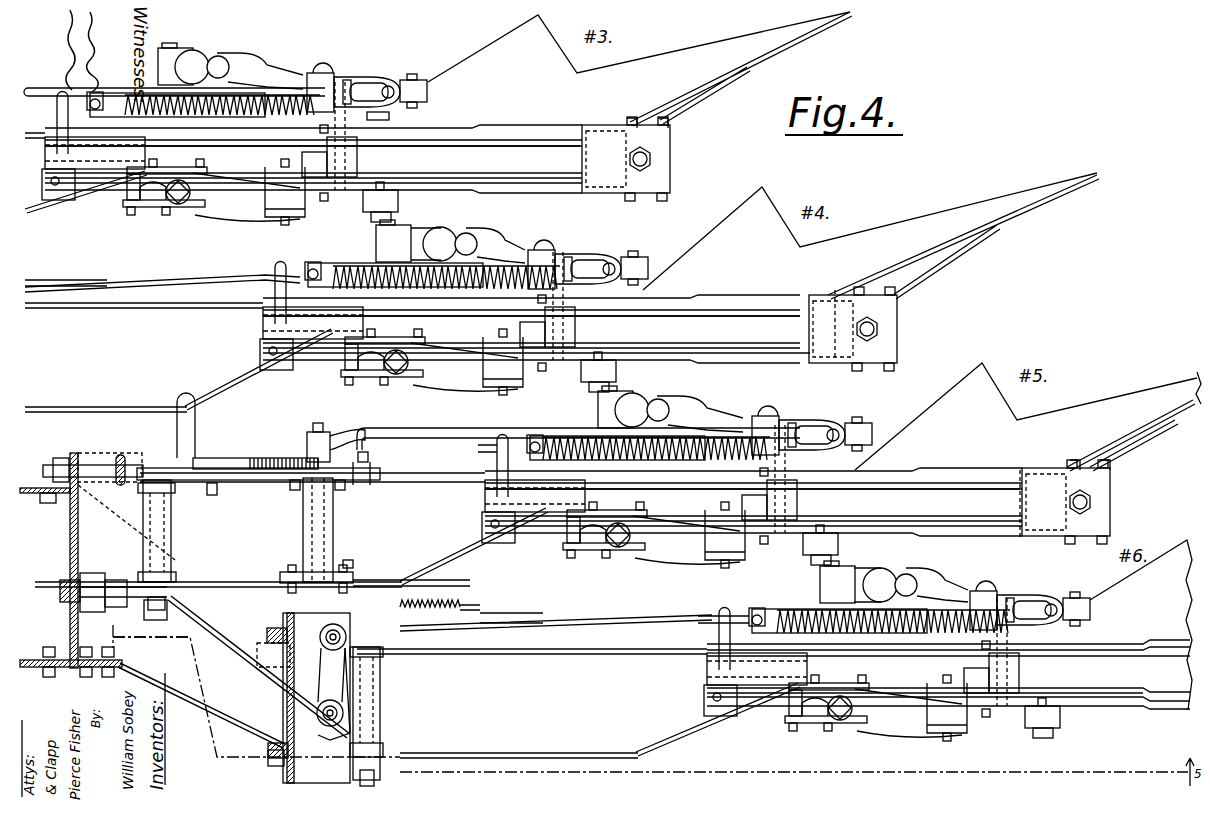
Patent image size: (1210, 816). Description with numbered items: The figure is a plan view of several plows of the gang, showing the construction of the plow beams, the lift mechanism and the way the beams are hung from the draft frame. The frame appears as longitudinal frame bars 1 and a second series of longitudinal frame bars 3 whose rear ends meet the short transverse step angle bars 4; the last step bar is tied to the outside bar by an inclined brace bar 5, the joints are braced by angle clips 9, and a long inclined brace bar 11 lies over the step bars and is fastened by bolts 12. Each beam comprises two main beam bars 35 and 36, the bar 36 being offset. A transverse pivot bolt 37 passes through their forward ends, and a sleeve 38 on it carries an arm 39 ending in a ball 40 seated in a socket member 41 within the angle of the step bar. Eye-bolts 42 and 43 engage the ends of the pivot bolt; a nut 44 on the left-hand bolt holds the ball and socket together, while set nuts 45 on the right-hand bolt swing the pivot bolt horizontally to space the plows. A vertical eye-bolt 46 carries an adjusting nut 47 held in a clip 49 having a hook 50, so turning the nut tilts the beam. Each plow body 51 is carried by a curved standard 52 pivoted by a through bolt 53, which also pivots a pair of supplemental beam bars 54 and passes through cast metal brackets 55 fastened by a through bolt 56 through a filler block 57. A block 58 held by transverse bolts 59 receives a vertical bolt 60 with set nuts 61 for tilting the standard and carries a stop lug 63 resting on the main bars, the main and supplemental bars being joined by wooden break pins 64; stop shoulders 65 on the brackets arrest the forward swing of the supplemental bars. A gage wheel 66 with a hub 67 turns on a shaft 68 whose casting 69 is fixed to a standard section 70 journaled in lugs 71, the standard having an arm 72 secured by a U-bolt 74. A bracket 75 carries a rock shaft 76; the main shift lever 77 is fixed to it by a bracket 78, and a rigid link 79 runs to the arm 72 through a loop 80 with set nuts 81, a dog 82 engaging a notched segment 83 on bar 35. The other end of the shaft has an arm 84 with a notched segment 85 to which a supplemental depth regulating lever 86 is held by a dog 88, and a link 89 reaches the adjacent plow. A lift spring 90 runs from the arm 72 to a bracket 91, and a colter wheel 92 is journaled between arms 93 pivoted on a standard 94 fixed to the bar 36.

The longitudinal frame bars 1 is at (40, 493).
The longitudinal frame bars 3 is at (170, 690).
The step angle bars 4 is at (283, 712).
The inclined brace bar 5 is at (210, 720).
The angle clips 9 is at (285, 615).
The inclined brace bar 11 is at (225, 585).
The bolts 12 is at (320, 735).
The main beam bar 35 is at (858, 490).
The main beam bar 36 is at (610, 752).
The pivot bolt 37 is at (393, 700).
The sleeve 38 is at (380, 700).
The arm 39 is at (144, 612).
The ball 40 is at (100, 573).
The socket member 41 is at (100, 577).
The eye-bolt 42 is at (375, 760).
The eye-bolt 43 is at (118, 457).
The nut 44 is at (268, 755).
The set nuts 45 is at (275, 628).
The eye-bolt 46 is at (195, 560).
The adjusting nut 47 is at (320, 632).
The clip 49 is at (318, 705).
The hook 50 is at (320, 630).
The plow body 51 is at (1176, 422).
The standard 52 is at (975, 530).
The through bolt 53 is at (532, 316).
The supplemental beam bars 54 is at (1090, 690).
The brackets 55 is at (1005, 712).
The through bolt 56 is at (955, 630).
The filler block 57 is at (960, 664).
The block 58 is at (1110, 497).
The transverse bolts 59 is at (1100, 460).
The link or bolt 60 is at (1090, 505).
The set nuts 61 is at (1085, 505).
The stop lug 63 is at (1022, 506).
The wooden break pins 64 is at (826, 330).
The stop shoulders 65 is at (580, 320).
The gage wheel 66 is at (775, 608).
The hub 67 is at (348, 572).
The shaft 68 is at (850, 575).
The casting 69 is at (885, 575).
The standard section 70 is at (935, 590).
The lugs 71 is at (1058, 730).
The arm 72 is at (1090, 606).
The U-bolt 74 is at (985, 590).
The bracket 75 is at (333, 500).
The rock shaft 76 is at (333, 483).
The main shift lever 77 is at (245, 458).
The bracket 78 is at (325, 432).
The link 79 is at (490, 430).
The loop 80 is at (1040, 597).
The set nuts 81 is at (1012, 597).
The dog 82 is at (292, 492).
The notched segment 83 is at (250, 480).
The arm 84 is at (385, 573).
The notched segment 85 is at (470, 598).
The supplemental depth regulating lever 86 is at (505, 618).
The dog 88 is at (430, 594).
The link 89 is at (615, 622).
The lift spring 90 is at (895, 640).
The bracket 91 is at (707, 677).
The colter wheel 92 is at (577, 457).
The arms 93 is at (591, 456).
The standard 94 is at (835, 720).